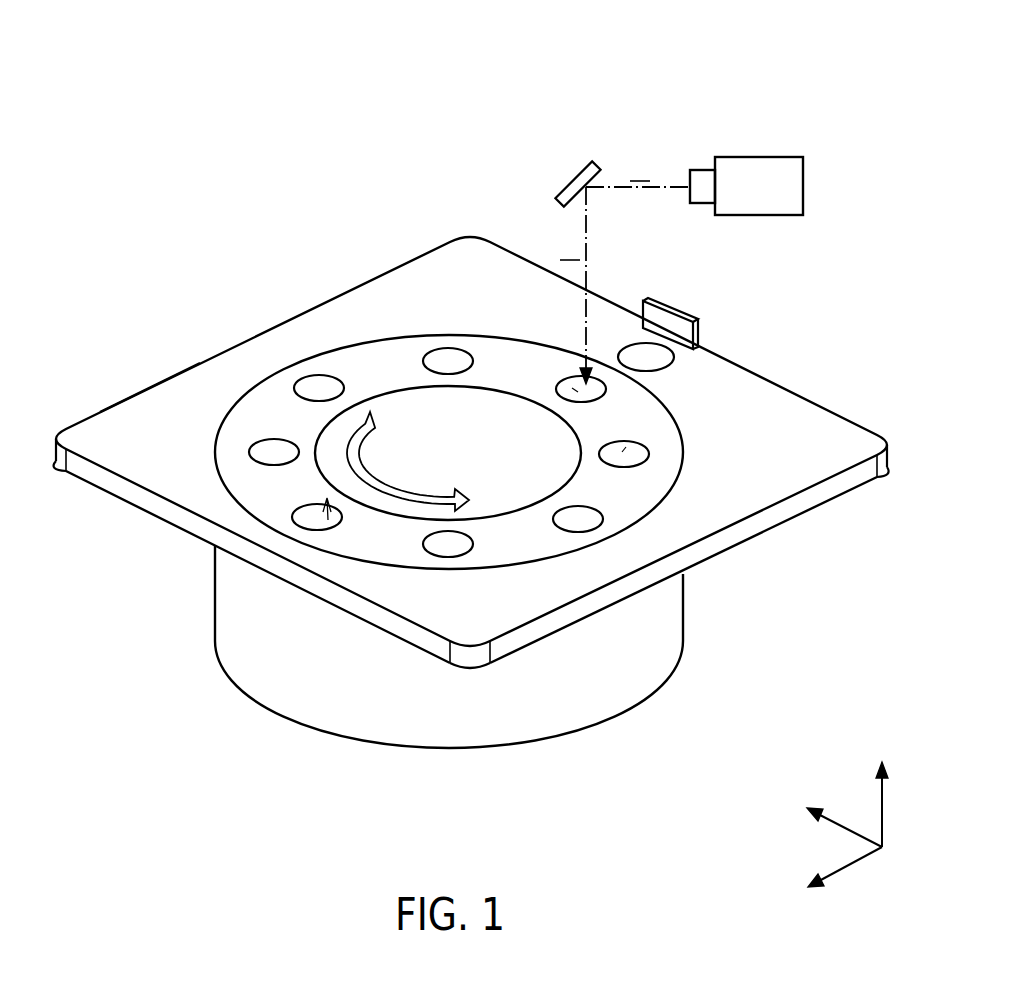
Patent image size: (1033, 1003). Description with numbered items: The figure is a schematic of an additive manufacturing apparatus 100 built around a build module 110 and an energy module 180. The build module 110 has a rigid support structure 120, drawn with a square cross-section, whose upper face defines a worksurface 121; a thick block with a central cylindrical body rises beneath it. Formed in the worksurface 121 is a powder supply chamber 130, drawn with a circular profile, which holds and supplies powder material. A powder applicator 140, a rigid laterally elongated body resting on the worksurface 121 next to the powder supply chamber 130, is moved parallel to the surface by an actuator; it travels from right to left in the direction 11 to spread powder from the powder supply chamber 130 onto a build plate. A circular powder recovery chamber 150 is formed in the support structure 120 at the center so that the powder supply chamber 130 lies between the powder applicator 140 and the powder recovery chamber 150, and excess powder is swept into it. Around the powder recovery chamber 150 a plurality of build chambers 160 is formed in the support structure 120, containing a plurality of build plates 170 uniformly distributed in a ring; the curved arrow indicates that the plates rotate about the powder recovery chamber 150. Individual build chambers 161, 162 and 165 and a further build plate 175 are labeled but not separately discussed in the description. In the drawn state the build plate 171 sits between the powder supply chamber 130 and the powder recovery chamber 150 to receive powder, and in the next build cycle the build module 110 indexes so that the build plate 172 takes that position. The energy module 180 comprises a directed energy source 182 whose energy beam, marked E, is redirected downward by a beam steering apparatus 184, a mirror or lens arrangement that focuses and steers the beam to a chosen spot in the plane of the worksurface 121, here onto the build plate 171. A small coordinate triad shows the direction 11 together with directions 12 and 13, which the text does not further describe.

The additive manufacturing apparatus 100 is at (160, 67).
The build module 110 is at (171, 257).
The support structure 120 is at (317, 323).
The worksurface 121 is at (153, 397).
The powder supply chamber 130 is at (645, 357).
The powder applicator 140 is at (673, 313).
The powder recovery chamber 150 is at (333, 468).
The plurality of build chambers 160 is at (253, 632).
The first bore 161 is at (565, 400).
The second bore 162 is at (645, 448).
The third bore 165 is at (300, 518).
The plurality of build plates 170 is at (358, 640).
The build plate 171 is at (570, 388).
The build plate 172 is at (622, 452).
The third insert 175 is at (328, 520).
The energy module 180 is at (813, 150).
The directed energy source 182 is at (763, 157).
The beam steering apparatus 184 is at (573, 168).
The direction 11 is at (845, 870).
The second axis 12 is at (883, 815).
The third axis 13 is at (828, 818).